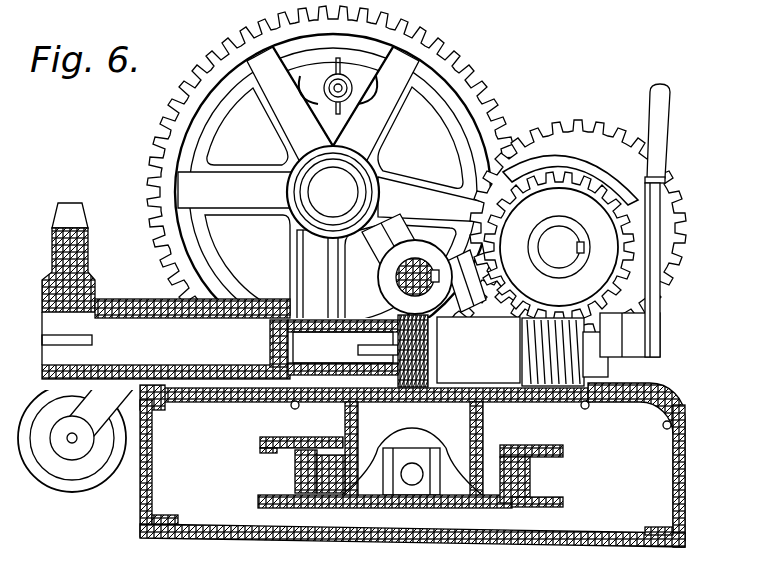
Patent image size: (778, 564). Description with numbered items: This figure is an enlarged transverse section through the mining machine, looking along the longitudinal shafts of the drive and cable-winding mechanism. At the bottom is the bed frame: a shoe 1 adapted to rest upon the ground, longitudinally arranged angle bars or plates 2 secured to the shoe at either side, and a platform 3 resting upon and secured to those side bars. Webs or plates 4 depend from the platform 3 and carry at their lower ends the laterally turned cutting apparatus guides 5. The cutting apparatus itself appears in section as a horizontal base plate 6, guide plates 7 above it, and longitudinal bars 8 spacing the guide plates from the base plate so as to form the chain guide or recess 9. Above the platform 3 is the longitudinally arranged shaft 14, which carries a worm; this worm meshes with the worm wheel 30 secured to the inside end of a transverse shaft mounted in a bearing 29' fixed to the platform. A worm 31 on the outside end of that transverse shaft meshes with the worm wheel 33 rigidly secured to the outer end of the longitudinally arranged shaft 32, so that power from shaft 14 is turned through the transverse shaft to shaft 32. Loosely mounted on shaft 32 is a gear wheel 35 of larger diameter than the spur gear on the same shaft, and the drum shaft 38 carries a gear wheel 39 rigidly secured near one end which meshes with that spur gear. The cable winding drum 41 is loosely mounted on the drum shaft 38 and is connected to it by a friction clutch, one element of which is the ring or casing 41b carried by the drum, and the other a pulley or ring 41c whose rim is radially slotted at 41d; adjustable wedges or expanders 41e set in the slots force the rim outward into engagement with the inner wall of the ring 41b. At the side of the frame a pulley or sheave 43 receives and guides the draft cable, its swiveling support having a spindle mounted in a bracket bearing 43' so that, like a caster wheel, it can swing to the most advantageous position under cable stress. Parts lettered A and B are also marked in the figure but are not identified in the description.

The shoe 1 is at (210, 526).
The angle bars or plates 2 is at (673, 483).
The platform 3 is at (262, 440).
The webs or plates 4 is at (345, 426).
The cutting apparatus guides 5 is at (385, 513).
The base plate 6 is at (412, 480).
The guide plates 7 is at (535, 435).
The bars 8 is at (295, 470).
The chain guide or recess 9 is at (258, 483).
The shaft 14 is at (317, 276).
The bearing 29' is at (522, 351).
The worm wheel 30 is at (428, 372).
The worm 31 is at (605, 367).
The shaft 32 is at (553, 238).
The worm wheel 33 is at (622, 252).
The gear wheel 35 is at (601, 132).
The drum shaft 38 is at (333, 192).
The gear wheel 39 is at (477, 90).
The cable winding drum 41 is at (460, 151).
The ring or casing 41b is at (570, 146).
The pulley or ring 41c is at (235, 190).
The slots 41d is at (376, 305).
The wedges or expanders 41e is at (318, 102).
The pulley or sheave 43 is at (72, 453).
The bracket bearing 43' is at (127, 414).
The housing A is at (648, 465).
The support plate B is at (537, 514).